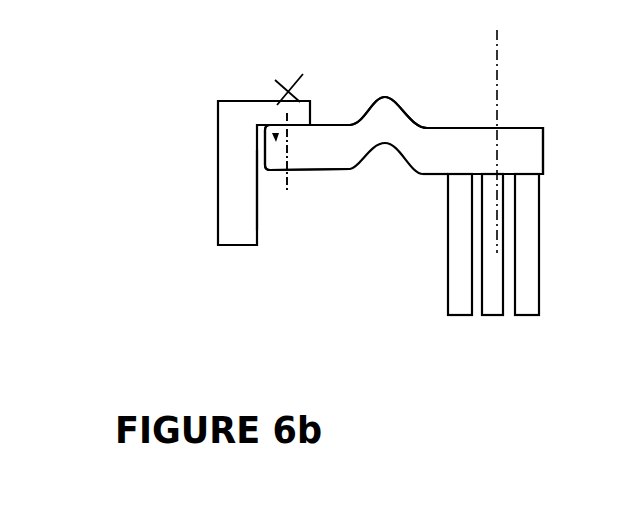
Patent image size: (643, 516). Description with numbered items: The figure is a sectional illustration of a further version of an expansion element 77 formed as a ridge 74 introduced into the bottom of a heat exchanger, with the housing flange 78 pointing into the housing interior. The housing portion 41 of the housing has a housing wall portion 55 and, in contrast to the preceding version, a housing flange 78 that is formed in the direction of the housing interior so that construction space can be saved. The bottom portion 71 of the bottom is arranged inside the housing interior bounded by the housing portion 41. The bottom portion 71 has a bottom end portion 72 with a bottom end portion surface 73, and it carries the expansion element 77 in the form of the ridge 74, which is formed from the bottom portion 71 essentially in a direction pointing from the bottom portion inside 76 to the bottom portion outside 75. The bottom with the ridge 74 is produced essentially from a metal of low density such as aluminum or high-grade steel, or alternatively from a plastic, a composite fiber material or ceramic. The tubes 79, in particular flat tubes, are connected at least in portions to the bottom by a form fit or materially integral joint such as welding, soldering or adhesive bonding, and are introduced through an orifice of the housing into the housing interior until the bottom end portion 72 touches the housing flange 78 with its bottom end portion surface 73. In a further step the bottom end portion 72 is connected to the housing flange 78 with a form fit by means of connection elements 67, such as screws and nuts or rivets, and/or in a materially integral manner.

The expansion element 77 is at (182, 56).
The housing portion 41 is at (240, 212).
The housing wall portion 55 is at (238, 180).
The housing flange 78 is at (276, 117).
The connection elements 67 is at (303, 74).
The bottom portion outside 75 is at (328, 118).
The ridge 74 is at (398, 125).
The bottom portion 71 is at (462, 148).
The bottom end portion 72 is at (302, 150).
The bottom end portion surface 73 is at (278, 172).
The bottom portion inside 76 is at (436, 182).
The tubes 79 is at (460, 273).